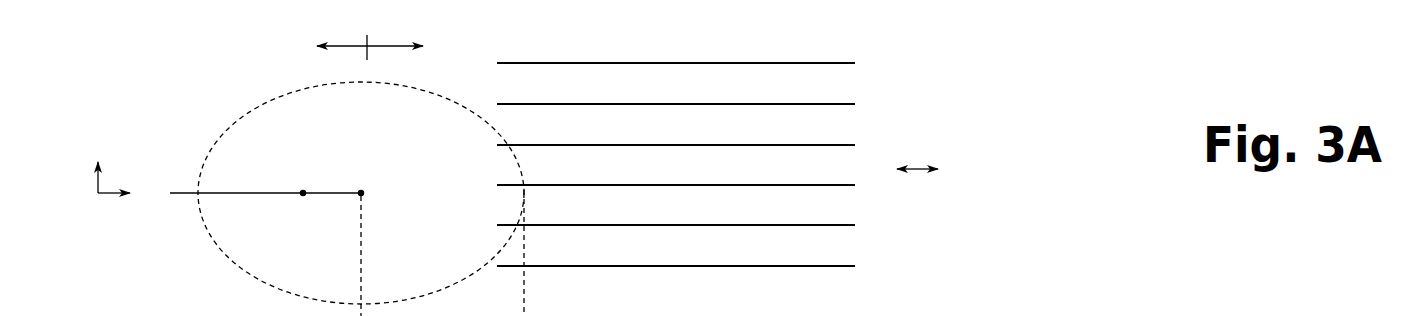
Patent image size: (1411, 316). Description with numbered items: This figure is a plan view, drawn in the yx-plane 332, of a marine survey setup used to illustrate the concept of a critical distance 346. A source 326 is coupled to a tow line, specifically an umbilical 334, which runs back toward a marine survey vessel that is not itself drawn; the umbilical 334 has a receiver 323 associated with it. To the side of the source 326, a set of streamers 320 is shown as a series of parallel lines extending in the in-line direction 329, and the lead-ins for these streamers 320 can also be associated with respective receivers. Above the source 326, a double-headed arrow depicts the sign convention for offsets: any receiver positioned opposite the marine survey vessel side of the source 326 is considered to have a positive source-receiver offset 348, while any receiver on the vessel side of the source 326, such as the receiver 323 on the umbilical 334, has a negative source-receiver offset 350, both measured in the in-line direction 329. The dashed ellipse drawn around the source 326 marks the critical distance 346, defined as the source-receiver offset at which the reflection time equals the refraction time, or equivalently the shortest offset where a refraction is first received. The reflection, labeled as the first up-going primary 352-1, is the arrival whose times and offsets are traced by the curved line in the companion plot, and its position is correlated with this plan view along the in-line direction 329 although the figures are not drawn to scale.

The streamers 320 is at (905, 58).
The receiver 323 is at (303, 191).
The source 326 is at (363, 190).
The in-line direction 329 is at (917, 167).
The yx-plane 332 is at (98, 195).
The umbilical 334 is at (185, 192).
The critical distance 346 is at (263, 102).
The positive source-receiver offset 348 is at (398, 46).
The negative source-receiver offset 350 is at (339, 46).
The first up-going primary 352-1 is at (723, 307).